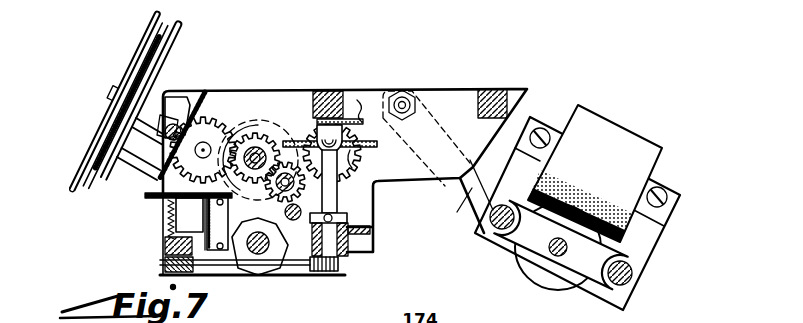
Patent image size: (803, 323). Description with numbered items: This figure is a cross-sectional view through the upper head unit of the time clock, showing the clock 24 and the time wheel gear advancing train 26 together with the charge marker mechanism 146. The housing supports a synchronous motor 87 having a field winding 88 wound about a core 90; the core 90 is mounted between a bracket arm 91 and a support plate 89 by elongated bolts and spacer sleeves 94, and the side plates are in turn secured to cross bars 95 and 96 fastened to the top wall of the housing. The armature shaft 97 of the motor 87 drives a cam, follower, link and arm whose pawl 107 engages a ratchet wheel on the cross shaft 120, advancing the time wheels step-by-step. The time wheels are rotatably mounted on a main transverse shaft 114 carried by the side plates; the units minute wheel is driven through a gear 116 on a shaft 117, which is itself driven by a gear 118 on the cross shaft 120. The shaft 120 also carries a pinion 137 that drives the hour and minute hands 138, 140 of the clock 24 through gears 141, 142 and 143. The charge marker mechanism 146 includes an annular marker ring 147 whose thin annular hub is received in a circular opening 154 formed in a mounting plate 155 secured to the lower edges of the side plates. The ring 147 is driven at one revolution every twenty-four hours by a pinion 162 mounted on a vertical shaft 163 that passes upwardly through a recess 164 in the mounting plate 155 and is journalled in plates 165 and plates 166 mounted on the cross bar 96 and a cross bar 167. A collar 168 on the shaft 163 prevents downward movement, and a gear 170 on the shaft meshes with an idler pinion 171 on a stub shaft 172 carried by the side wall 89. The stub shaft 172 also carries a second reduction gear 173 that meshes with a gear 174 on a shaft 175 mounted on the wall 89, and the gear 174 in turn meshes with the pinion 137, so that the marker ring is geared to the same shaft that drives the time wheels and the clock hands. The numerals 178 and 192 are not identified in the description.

The clock 24 is at (78, 146).
The time wheel gear advancing train 26 is at (218, 273).
The synchronous motor 87 is at (551, 274).
The field winding 88 is at (630, 143).
The support plate 89 is at (455, 102).
The core 90 is at (655, 224).
The bracket arm 91 is at (457, 210).
The spacer sleeves 94 is at (494, 232).
The cross bar 95 is at (494, 92).
The cross bar 96 is at (338, 90).
The armature shaft 97 is at (550, 253).
The pawl 107 is at (584, 318).
The main transverse shaft 114 is at (238, 262).
The gear 116 is at (311, 282).
The shaft 117 is at (296, 262).
The gear 118 is at (285, 130).
The cross shaft 120 is at (257, 133).
The pinion 137 is at (248, 143).
The hour hand 138 is at (97, 118).
The minute hand 140 is at (127, 60).
The gear 141 is at (215, 113).
The gear 142 is at (217, 117).
The gear 143 is at (178, 98).
The charge marker mechanism 146 is at (314, 276).
The annular marker ring 147 is at (173, 272).
The circular opening 154 is at (168, 247).
The mounting plate 155 is at (165, 262).
The pinion 162 is at (340, 270).
The vertical shaft 163 is at (350, 168).
The recess 164 is at (366, 236).
The plates 165 is at (350, 221).
The plates 166 is at (358, 116).
The cross bar 167 is at (373, 253).
The collar 168 is at (350, 214).
The gear 170 is at (365, 128).
The idler pinion 171 is at (316, 135).
The stub shaft 172 is at (378, 150).
The second reduction gear 173 is at (418, 160).
The gear 174 is at (282, 205).
The shaft 175 is at (270, 180).
The shaft 178 is at (298, 318).
The pin 192 is at (345, 318).